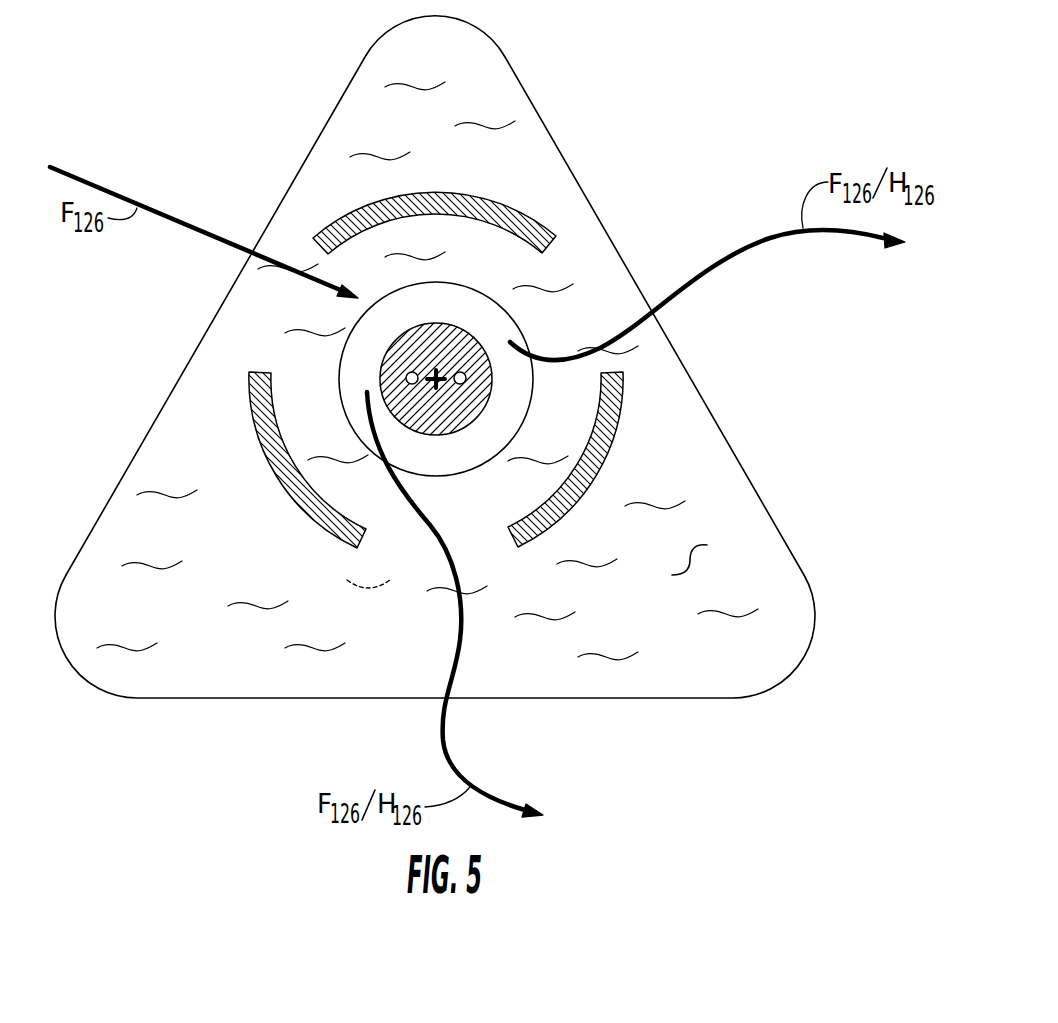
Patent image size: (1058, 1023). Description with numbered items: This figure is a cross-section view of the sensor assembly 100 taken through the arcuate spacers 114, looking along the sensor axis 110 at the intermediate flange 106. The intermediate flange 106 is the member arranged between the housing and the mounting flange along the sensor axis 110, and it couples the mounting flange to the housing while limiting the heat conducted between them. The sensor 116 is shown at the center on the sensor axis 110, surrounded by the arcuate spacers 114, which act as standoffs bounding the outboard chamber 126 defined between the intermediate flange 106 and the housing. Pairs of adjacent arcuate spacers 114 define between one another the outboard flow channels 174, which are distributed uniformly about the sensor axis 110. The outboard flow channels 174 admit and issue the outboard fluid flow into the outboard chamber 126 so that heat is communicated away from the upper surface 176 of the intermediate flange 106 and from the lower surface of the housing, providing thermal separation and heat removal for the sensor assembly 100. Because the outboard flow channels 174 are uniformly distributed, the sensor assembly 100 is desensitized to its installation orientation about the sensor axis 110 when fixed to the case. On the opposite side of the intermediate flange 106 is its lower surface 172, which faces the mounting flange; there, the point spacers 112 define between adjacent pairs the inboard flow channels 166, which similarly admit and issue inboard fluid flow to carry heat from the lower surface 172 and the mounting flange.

The sensor assembly 100 is at (167, 783).
The intermediate flange 106 is at (655, 440).
The sensor axis 110 is at (440, 385).
The point spacers 112 is at (416, 357).
The arcuate spacers 114 is at (378, 203).
The sensor 116 is at (445, 370).
The outboard chamber 126 is at (290, 427).
The inboard flow channels 166 is at (850, 408).
The lower surface 172 is at (370, 585).
The outboard flow channels 174 is at (293, 318).
The upper surface 176 is at (692, 565).